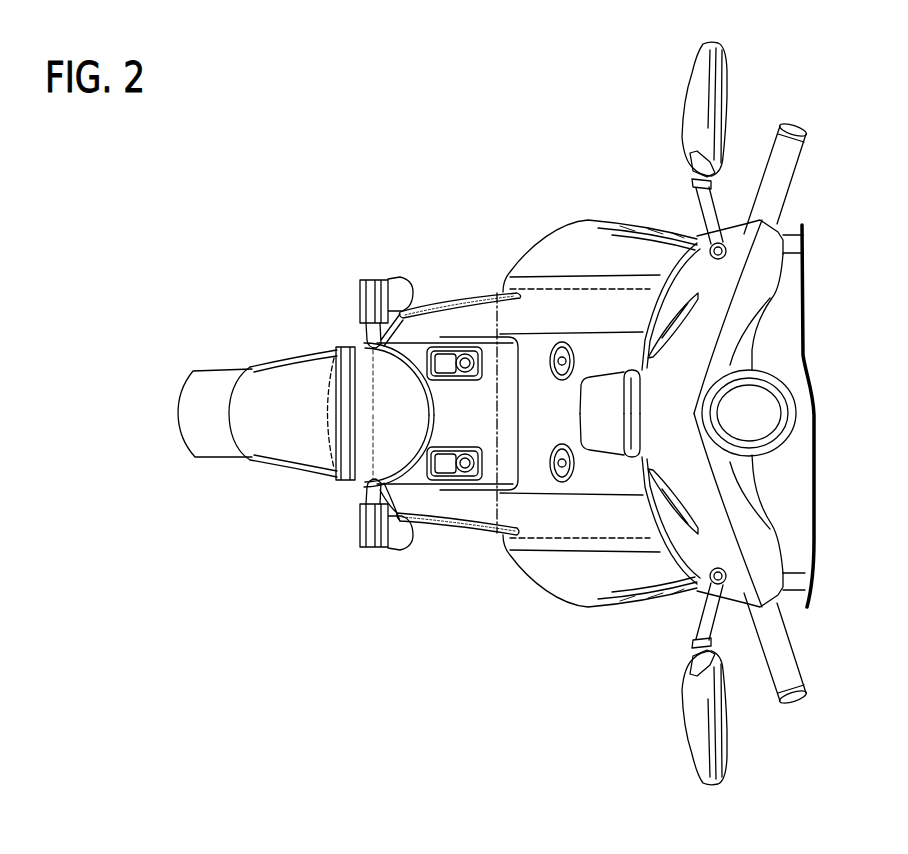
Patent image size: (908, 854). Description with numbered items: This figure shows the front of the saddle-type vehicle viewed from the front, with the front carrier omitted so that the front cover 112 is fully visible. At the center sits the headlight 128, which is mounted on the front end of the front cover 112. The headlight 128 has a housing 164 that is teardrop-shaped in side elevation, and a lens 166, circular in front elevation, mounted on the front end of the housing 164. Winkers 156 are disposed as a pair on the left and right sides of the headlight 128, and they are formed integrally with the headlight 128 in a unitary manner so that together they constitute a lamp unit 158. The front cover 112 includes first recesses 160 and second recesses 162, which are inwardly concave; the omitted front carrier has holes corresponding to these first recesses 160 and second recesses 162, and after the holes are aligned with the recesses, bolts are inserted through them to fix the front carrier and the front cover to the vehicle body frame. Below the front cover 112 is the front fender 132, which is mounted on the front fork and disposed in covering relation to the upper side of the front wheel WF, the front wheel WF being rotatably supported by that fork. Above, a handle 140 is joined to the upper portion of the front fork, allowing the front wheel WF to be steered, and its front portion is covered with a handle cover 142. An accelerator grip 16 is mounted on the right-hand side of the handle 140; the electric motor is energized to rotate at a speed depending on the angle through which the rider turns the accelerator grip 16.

The accelerator grip 16 is at (782, 167).
The front cover 112 is at (474, 320).
The headlight 128 is at (323, 443).
The front fender 132 is at (281, 440).
The handle 140 is at (794, 703).
The handle cover 142 is at (763, 277).
The winkers 156 is at (360, 300).
The lamp unit 158 is at (334, 340).
The first recesses 160 is at (449, 352).
The second recesses 162 is at (553, 353).
The housing 164 is at (394, 440).
The lens 166 is at (328, 399).
The front wheel WF is at (203, 388).